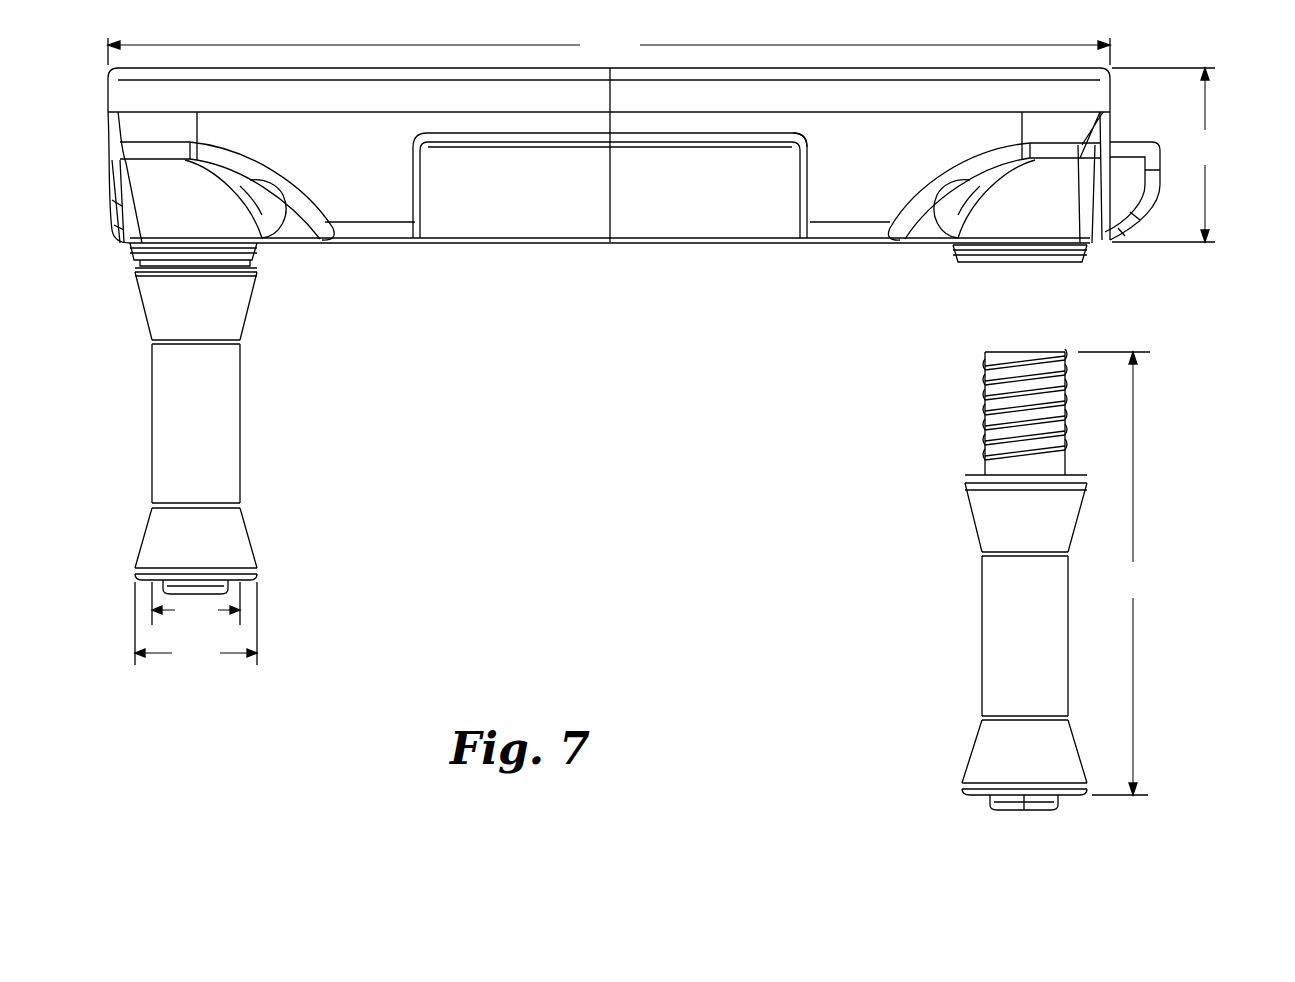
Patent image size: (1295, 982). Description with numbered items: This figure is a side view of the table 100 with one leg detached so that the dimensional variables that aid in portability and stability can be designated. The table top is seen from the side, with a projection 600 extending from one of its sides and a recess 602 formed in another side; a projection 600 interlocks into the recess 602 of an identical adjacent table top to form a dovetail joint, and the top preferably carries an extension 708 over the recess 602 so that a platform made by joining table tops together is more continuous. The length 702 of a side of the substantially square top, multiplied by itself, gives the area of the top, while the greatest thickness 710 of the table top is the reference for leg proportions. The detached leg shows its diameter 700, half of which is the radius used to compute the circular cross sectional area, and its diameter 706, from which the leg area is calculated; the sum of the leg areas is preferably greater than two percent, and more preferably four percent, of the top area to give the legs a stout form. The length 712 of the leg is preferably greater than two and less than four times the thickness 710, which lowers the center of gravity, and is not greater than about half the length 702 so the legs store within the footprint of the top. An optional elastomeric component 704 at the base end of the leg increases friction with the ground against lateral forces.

The table 100 is at (1073, 604).
The projection 600 is at (1132, 250).
The recess 602 is at (692, 194).
The diameter 700 is at (196, 603).
The length 702 is at (609, 49).
The elastomeric component 704 is at (984, 806).
The diameter 706 is at (196, 623).
The extension 708 is at (788, 122).
The greatest thickness 710 is at (1168, 155).
The length 712 is at (1115, 573).